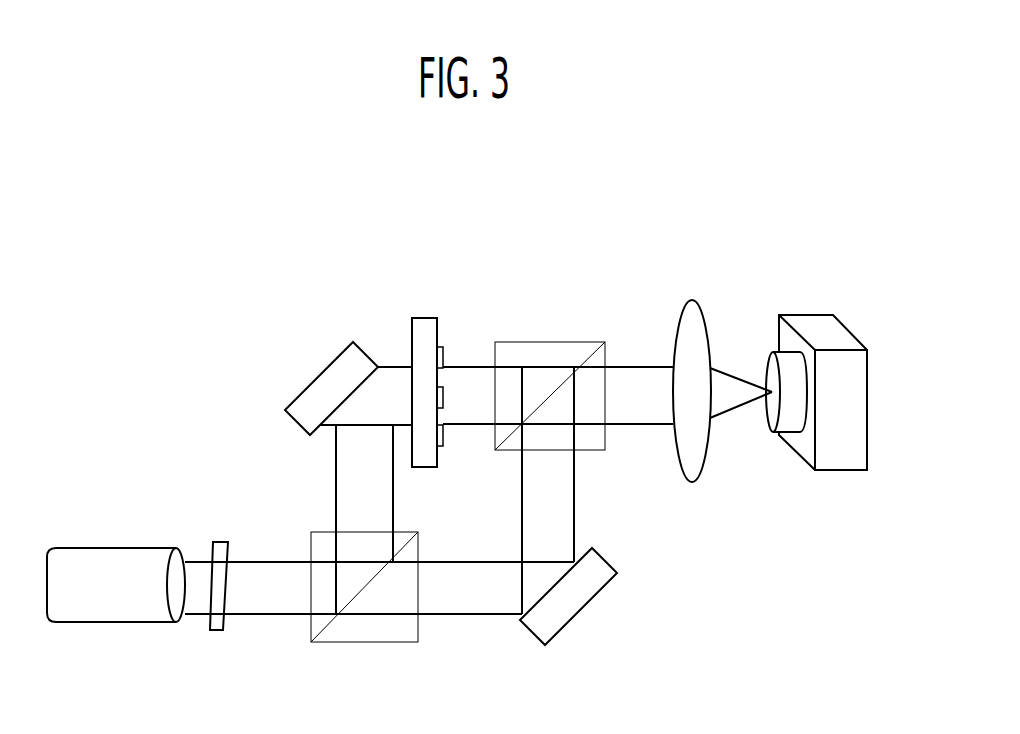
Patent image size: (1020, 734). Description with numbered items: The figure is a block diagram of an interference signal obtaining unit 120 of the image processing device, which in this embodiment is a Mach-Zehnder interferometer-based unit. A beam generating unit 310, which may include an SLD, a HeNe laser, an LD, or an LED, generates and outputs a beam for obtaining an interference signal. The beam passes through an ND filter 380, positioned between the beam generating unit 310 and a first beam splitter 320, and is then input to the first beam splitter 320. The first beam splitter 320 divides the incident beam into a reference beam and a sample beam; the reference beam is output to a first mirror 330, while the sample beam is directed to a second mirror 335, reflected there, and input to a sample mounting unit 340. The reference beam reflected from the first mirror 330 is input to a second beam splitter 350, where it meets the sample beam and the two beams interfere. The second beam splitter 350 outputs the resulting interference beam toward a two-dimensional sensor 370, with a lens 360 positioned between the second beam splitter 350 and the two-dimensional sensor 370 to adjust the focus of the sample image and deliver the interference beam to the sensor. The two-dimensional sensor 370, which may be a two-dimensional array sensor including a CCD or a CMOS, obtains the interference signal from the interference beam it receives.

The interference signal obtaining unit 120 is at (726, 185).
The beam generating unit 310 is at (107, 547).
The ND filter 380 is at (225, 541).
The first beam splitter 320 is at (364, 643).
The first mirror 330 is at (603, 548).
The second mirror 335 is at (340, 354).
The sample mounting unit 340 is at (425, 317).
The second beam splitter 350 is at (552, 342).
The lens 360 is at (693, 300).
The 2D sensor 370 is at (808, 315).